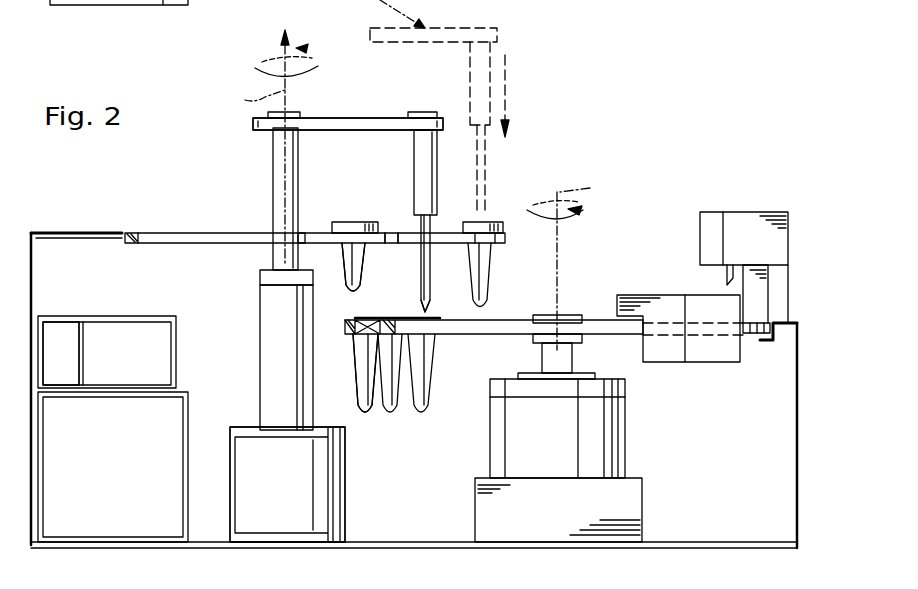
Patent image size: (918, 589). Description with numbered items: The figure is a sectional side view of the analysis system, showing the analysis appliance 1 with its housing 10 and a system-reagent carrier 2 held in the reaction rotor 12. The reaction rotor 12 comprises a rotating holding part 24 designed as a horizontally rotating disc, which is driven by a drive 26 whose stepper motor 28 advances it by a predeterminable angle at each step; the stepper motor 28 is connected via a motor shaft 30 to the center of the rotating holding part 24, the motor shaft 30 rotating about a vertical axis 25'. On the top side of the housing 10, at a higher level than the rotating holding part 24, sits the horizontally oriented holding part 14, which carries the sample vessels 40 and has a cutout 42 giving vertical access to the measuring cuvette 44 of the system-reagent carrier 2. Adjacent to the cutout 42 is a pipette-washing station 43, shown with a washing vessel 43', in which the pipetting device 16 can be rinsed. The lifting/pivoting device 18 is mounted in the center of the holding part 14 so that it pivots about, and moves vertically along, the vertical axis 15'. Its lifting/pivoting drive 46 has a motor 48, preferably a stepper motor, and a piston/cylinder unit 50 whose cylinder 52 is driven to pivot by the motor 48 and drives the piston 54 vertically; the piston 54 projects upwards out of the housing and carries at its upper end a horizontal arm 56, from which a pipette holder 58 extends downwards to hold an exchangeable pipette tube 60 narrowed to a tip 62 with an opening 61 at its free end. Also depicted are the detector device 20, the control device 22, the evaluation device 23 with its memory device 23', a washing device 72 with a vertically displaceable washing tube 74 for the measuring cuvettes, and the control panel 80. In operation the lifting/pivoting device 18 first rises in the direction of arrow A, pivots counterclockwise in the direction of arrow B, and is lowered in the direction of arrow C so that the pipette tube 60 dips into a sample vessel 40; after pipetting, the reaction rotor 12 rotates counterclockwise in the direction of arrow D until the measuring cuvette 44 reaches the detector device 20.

The analysis appliance 1 is at (60, 227).
The system-reagent carrier 2 is at (412, 430).
The housing 10 is at (800, 440).
The reaction rotor 12 is at (601, 308).
The holding part 14 is at (167, 236).
The vertical axis 15' is at (246, 87).
The pipetting device 16 is at (412, 256).
The lifting/pivoting device 18 is at (345, 110).
The detector device 20 is at (742, 345).
The control device 22 is at (122, 471).
The evaluation device 23 is at (107, 329).
The memory device 23' is at (63, 327).
The rotating holding part 24 is at (505, 325).
The axis 25' is at (590, 259).
The drive 26 is at (632, 420).
The stepper motor 28 is at (600, 455).
The motor shaft 30 is at (567, 358).
The sample vessel 40 is at (478, 260).
The cutout 42 is at (395, 232).
The pipette-washing station 43 is at (349, 228).
The tube 43' is at (340, 287).
The measuring cuvette 44 is at (432, 403).
The lifting/pivoting drive 46 is at (243, 405).
The motor 48 is at (333, 500).
The piston/cylinder unit 50 is at (256, 293).
The cylinder 52 is at (300, 385).
The piston 54 is at (275, 181).
The arm 56 is at (385, 122).
The pipette holder 58 is at (425, 172).
The pipette tube 60 is at (430, 265).
The opening 61 is at (495, 212).
The tip 62 is at (432, 310).
The washing device 72 is at (742, 212).
The washing tube 74 is at (727, 282).
The control panel 80 is at (160, 10).
The arrow A is at (278, 52).
The arrow B is at (305, 49).
The arrow C is at (506, 92).
The arrow D is at (585, 212).